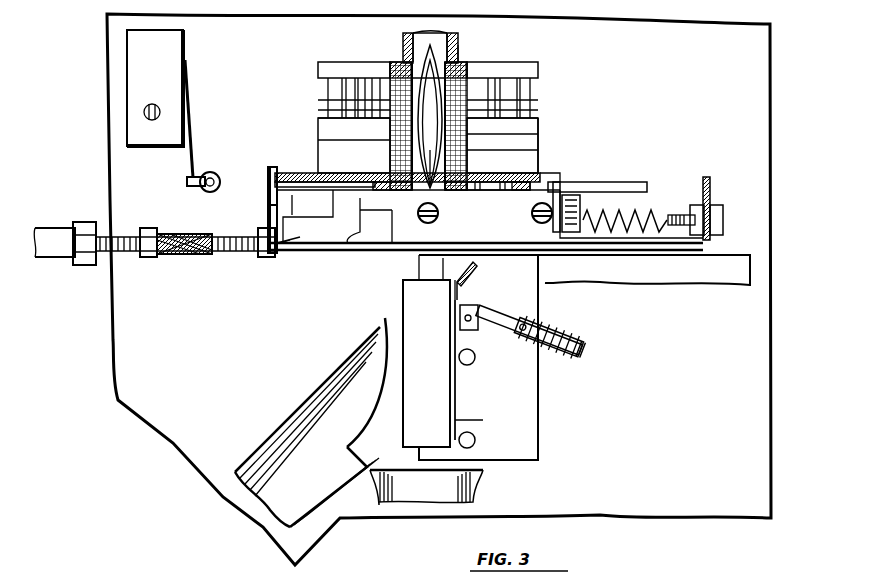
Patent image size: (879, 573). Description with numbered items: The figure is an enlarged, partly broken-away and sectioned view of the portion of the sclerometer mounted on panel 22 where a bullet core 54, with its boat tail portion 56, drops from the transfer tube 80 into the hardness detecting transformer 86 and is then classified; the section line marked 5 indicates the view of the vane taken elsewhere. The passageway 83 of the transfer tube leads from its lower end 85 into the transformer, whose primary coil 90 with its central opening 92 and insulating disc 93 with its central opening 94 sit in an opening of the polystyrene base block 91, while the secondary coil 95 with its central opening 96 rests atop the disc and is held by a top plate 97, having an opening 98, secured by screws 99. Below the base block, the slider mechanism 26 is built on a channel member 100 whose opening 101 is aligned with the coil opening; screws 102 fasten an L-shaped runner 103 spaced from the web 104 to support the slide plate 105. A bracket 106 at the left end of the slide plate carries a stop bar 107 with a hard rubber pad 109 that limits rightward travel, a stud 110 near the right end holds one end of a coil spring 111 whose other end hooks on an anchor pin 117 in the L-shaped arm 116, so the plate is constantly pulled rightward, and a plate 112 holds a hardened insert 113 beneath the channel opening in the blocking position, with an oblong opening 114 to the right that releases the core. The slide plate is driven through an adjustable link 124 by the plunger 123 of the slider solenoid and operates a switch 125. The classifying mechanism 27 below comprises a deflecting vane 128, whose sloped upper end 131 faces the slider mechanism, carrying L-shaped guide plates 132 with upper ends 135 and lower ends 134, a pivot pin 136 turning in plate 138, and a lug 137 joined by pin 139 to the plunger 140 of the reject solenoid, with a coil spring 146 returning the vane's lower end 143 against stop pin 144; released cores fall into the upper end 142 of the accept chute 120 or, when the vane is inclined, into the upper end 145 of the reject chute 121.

The panel 22 is at (758, 118).
The slider mechanism 26 is at (660, 136).
The accept-reject or classifying mechanism 27 is at (341, 332).
The bullet core 54 is at (420, 86).
The boat tail portion 56 is at (405, 160).
The transfer tube 80 is at (408, 36).
The passageway 83 is at (445, 44).
The lower end of the transfer tube 85 is at (460, 50).
The hardness detecting transformer 86 is at (290, 73).
The primary coil 90 is at (500, 146).
The base block 91 is at (540, 160).
The central opening 92 is at (395, 138).
The insulating disc 93 is at (520, 120).
The central opening 94 is at (455, 126).
The secondary coil 95 is at (530, 90).
The central opening 96 is at (532, 102).
The top plate 97 is at (540, 70).
The opening 98 is at (396, 66).
The screws 99 is at (326, 98).
The channel member 100 is at (308, 250).
The opening 101 is at (460, 158).
The screws 102 is at (432, 222).
The L-shaped runner 103 is at (298, 238).
The web 104 is at (565, 180).
The slide plate 105 is at (644, 188).
The bracket 106 is at (285, 243).
The stop bar 107 is at (268, 206).
The pad 109 is at (278, 170).
The stud 110 is at (572, 234).
The coil spring 111 is at (640, 212).
The plate 112 is at (447, 191).
The hardened insert 113 is at (425, 192).
The oblong opening 114 is at (490, 191).
The L-shaped arm 116 is at (690, 245).
The anchor pin 117 is at (730, 220).
The accept chute 120 is at (484, 498).
The reject chute 121 is at (283, 420).
The plunger 123 is at (55, 252).
The adjustable link 124 is at (187, 256).
The switch 125 is at (188, 44).
The deflecting vane 128 is at (457, 394).
The upper end of the vane 131 is at (478, 270).
The L-shaped guide plates 132 is at (403, 300).
The lower ends of the guide plates 134 is at (410, 398).
The upper ends of the guide plates 135 is at (407, 282).
The pivot pin 136 is at (476, 360).
The lug 137 is at (466, 306).
The plate 138 is at (540, 430).
The pin 139 is at (478, 314).
The plunger 140 is at (588, 352).
The upper end of the accept chute 142 is at (486, 478).
The lower end of the vane 143 is at (484, 420).
The stop pin 144 is at (476, 441).
The upper end of the reject chute 145 is at (335, 395).
The coil spring 146 is at (558, 340).
The section line 5- 5 is at (380, 262).